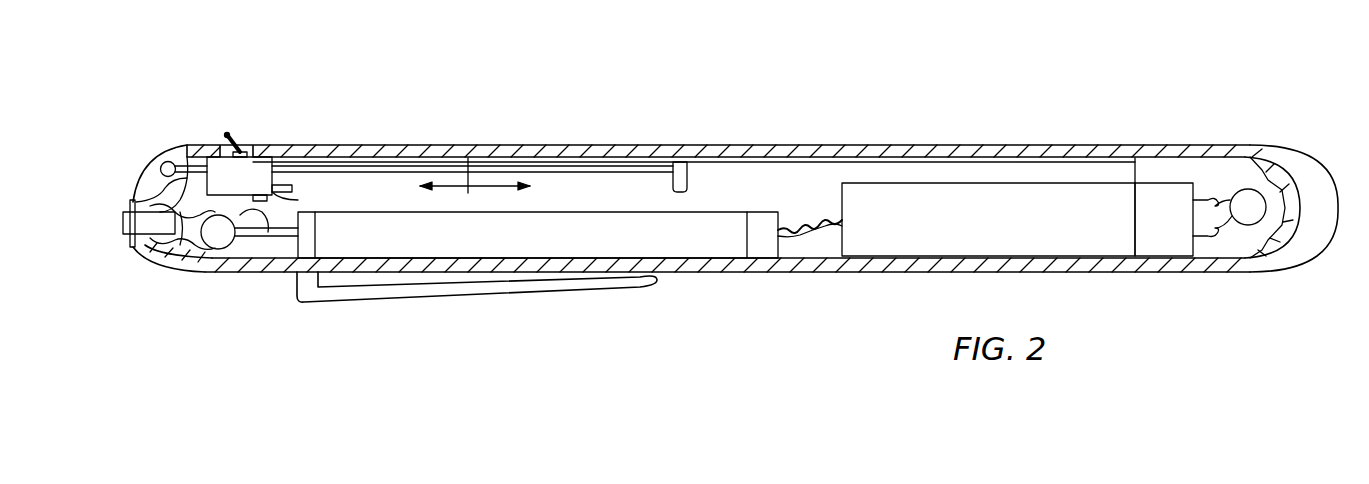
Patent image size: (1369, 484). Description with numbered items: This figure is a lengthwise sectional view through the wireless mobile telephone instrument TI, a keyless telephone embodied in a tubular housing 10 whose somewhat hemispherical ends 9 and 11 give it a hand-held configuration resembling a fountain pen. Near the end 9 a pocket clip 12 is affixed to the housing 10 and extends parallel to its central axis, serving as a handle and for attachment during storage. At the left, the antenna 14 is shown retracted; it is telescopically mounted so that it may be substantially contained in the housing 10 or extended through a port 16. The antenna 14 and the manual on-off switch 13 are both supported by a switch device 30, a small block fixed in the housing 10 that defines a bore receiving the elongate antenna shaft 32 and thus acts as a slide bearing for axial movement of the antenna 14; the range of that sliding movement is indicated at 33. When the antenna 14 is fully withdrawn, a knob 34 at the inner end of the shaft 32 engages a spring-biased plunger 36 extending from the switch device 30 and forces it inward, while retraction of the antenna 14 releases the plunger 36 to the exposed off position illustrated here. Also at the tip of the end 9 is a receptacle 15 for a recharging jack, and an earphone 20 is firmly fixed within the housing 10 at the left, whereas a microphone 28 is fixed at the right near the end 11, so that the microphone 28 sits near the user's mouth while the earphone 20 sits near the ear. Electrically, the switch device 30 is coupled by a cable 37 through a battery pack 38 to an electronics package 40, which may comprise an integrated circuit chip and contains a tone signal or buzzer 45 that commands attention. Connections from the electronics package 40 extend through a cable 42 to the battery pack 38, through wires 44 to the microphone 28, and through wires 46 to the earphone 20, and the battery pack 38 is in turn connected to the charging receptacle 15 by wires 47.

The hemispherical end 9 is at (1330, 238).
The tubular housing 10 is at (352, 138).
The hemispherical end 11 is at (147, 190).
The pocket clip 12 is at (428, 292).
The manual on-off switch 13 is at (232, 135).
The antenna 14 is at (169, 160).
The receptacle 15 is at (118, 235).
The port 16 is at (188, 182).
The earphone 20 is at (200, 272).
The microphone 28 is at (1248, 225).
The switch device 30 is at (270, 157).
The antenna shaft 32 is at (395, 167).
The slide travel 33 is at (468, 158).
The knob 34 is at (687, 177).
The spring-biased plunger 36 is at (286, 188).
The cable 37 is at (290, 201).
The battery pack 38 is at (541, 212).
The electronics package 40 is at (923, 187).
The cable 42 is at (810, 232).
The wires 44 is at (1230, 190).
The tone signal or buzzer 45 is at (1164, 219).
The wires 46 is at (248, 232).
The wires 47 is at (178, 275).
The wireless mobile telephone instrument TI is at (670, 123).